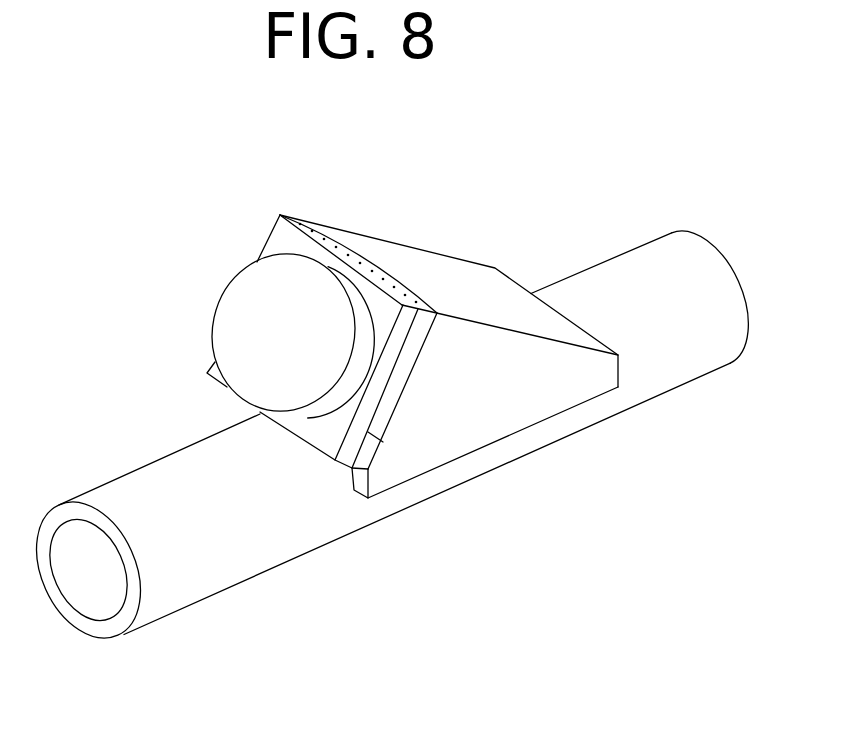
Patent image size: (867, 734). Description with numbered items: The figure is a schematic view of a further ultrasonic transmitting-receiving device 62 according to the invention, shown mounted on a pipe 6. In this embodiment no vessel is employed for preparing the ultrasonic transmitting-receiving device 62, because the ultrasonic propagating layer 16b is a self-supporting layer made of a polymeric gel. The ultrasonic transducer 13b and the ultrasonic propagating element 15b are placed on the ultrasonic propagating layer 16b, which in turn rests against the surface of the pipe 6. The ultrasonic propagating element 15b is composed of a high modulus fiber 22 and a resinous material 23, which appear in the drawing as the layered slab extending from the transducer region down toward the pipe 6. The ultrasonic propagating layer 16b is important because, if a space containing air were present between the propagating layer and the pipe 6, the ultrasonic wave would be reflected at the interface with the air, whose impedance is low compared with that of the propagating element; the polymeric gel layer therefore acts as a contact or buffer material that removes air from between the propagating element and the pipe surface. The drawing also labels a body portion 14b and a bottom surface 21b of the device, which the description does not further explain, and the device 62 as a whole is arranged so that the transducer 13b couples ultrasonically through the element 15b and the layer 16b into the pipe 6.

The pipe 6 is at (220, 593).
The ultrasonic transmitting-receiving device 62 is at (243, 198).
The ultrasonic propagating element 15b is at (303, 208).
The ultrasonic transducer 13b is at (230, 307).
The holder body 14b is at (317, 417).
The high modulus fiber 22 is at (373, 433).
The resinous material 23 is at (388, 403).
The bottom surface 21b is at (523, 430).
The ultrasonic propagating layer 16b is at (582, 385).